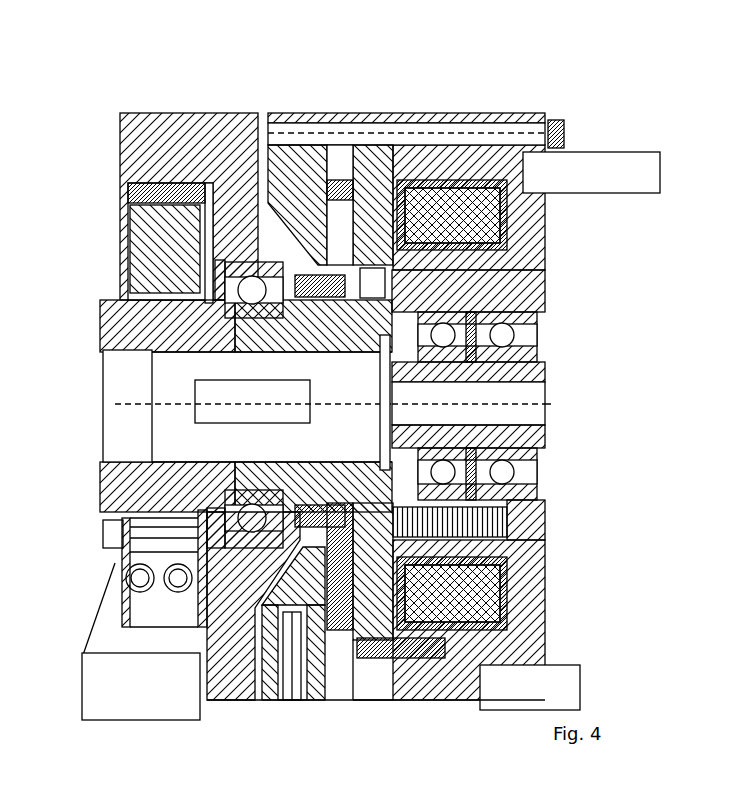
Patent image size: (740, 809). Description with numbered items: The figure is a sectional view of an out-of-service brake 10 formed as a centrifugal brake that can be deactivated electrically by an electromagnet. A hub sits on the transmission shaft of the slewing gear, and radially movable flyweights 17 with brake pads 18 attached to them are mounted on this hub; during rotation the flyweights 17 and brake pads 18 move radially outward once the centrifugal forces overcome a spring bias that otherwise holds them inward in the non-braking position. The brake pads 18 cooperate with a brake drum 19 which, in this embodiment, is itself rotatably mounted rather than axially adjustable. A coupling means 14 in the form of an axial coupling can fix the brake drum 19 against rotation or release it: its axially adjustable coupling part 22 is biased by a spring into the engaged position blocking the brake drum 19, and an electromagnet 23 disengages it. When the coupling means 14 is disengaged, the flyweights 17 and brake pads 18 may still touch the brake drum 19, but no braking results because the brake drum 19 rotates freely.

The out-of-service brake 10 is at (88, 270).
The coupling means 14 is at (345, 165).
The flyweights 17 is at (128, 222).
The brake pads 18 is at (120, 190).
The brake drum 19 is at (137, 128).
The coupling part 22 is at (387, 113).
The electromagnet 23 is at (505, 587).